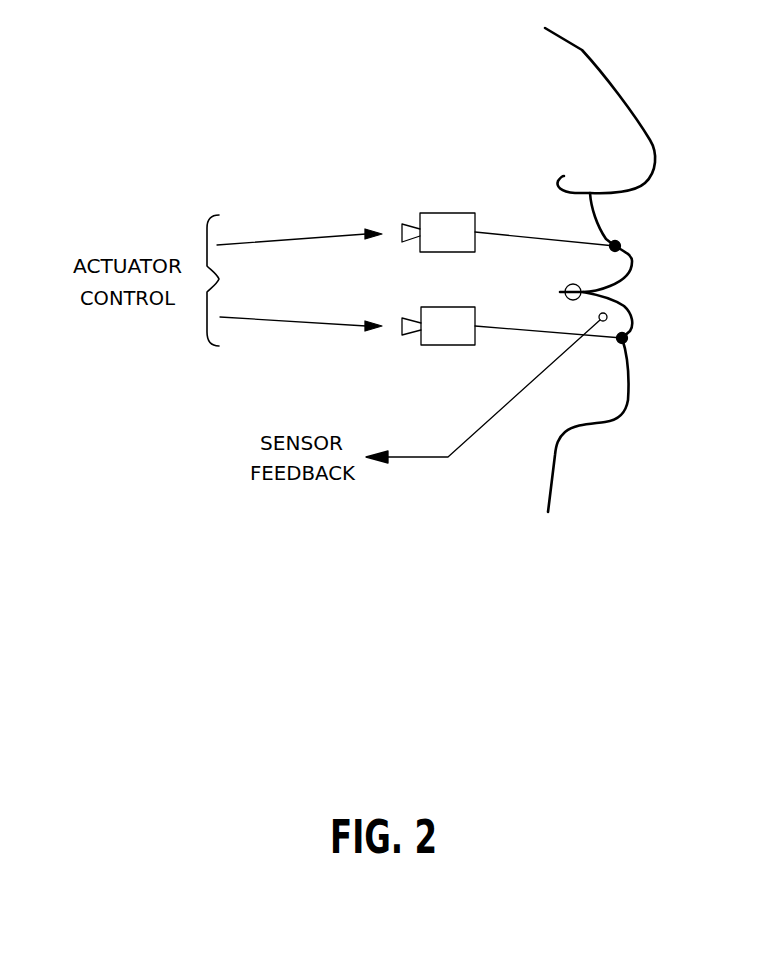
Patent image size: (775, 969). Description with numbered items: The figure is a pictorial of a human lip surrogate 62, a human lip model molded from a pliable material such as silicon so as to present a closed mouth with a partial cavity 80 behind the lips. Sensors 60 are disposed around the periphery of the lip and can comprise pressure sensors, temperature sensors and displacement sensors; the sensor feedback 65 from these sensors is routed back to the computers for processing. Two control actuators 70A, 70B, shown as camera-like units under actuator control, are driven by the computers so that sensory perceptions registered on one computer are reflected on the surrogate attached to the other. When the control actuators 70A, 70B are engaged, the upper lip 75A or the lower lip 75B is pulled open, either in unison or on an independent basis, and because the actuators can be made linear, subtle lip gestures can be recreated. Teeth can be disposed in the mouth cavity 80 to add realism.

The human lip surrogate 62 is at (657, 157).
The sensors 60 is at (623, 303).
The upper lip 75A is at (630, 253).
The lower lip 75B is at (630, 329).
The partial cavity 80 is at (565, 294).
The control actuator 70A is at (445, 213).
The control actuator 70B is at (448, 345).
The sensor feedback 65 is at (414, 457).